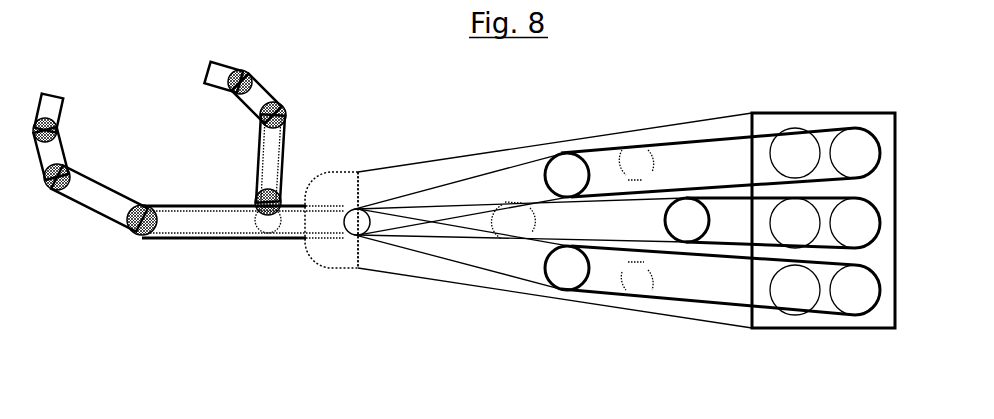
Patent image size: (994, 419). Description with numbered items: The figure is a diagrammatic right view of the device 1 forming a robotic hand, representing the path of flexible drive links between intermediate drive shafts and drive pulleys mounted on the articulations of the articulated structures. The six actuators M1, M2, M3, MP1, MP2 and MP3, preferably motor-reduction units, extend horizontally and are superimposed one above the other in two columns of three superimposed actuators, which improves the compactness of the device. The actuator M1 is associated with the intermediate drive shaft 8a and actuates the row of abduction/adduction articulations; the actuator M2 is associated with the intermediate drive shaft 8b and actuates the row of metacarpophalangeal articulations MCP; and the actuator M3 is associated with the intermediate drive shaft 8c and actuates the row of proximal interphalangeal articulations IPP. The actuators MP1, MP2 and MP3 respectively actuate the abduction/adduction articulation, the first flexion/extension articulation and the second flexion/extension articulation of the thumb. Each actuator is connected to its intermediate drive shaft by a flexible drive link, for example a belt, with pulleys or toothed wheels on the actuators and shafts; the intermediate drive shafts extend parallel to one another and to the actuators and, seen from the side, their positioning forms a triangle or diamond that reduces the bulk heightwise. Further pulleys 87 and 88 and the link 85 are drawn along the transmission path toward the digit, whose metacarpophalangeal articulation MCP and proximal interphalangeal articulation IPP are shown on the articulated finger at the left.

The device forming a robotic hand 1 is at (301, 340).
The tendon / cable 85 is at (498, 213).
The upper pulley 87 is at (565, 162).
The lower pulley 88 is at (562, 287).
The intermediate drive shaft 8a is at (690, 210).
The intermediate drive shaft 8b is at (635, 283).
The intermediate drive shaft 8c is at (637, 155).
The actuator M1 is at (873, 225).
The actuator M2 is at (793, 308).
The actuator M3 is at (790, 140).
The actuator MP1 is at (807, 223).
The actuator MP2 is at (863, 305).
The actuator MP3 is at (877, 155).
The proximal interphalangeal articulation IPP is at (45, 190).
The metacarpophalangeal articulation MCP is at (142, 230).